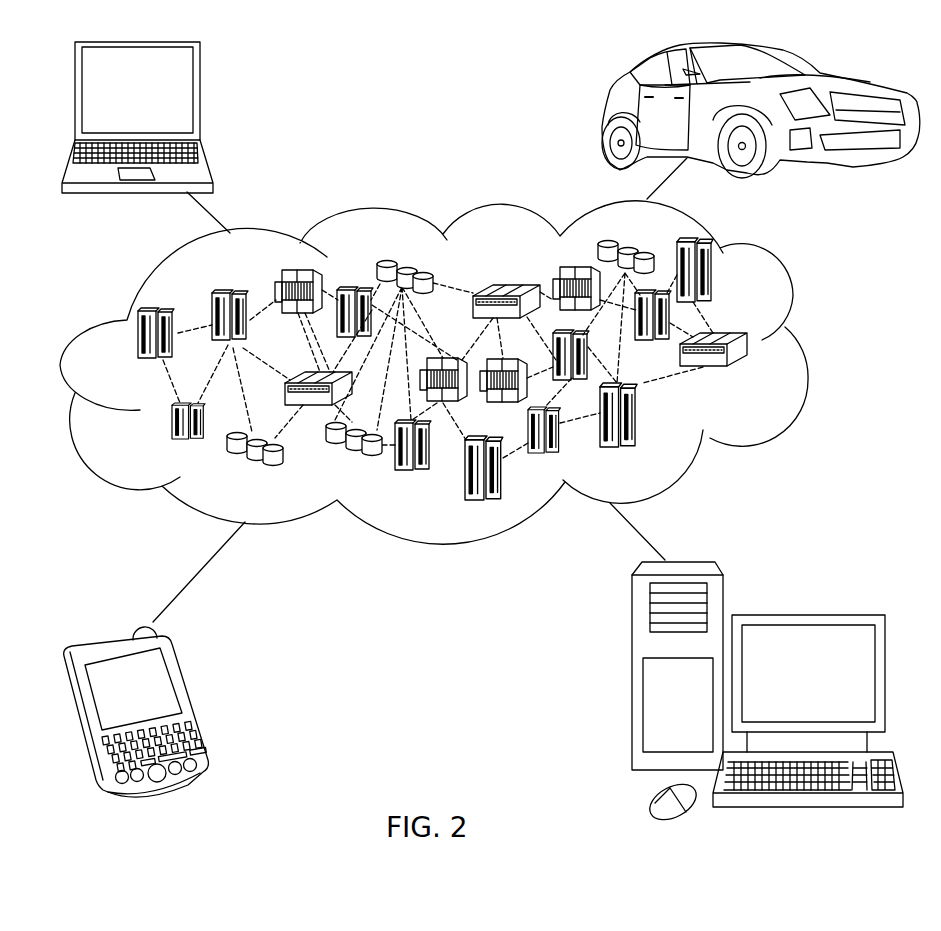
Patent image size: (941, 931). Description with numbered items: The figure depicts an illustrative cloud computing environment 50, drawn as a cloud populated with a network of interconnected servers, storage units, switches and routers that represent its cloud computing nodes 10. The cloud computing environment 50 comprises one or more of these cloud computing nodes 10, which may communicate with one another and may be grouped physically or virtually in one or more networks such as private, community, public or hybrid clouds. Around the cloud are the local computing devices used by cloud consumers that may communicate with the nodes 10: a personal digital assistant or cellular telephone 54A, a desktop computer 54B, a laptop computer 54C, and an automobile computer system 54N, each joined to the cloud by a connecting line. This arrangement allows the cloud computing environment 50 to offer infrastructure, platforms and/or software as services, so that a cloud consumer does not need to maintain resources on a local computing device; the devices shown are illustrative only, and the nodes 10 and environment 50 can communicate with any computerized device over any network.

The cloud computing node 10 is at (750, 377).
The cloud computing environment 50 is at (800, 345).
The personal digital assistant or cellular telephone 54A is at (192, 700).
The desktop computer 54B is at (803, 614).
The laptop computer 54C is at (202, 98).
The automobile computer system 54N is at (603, 112).